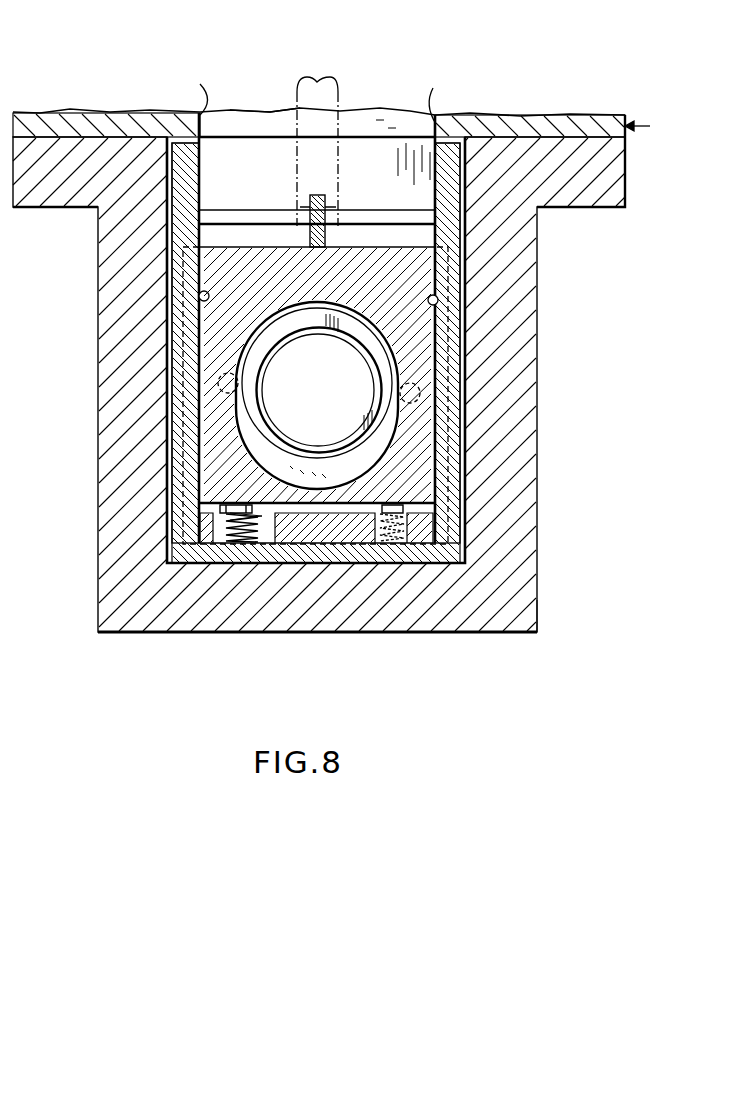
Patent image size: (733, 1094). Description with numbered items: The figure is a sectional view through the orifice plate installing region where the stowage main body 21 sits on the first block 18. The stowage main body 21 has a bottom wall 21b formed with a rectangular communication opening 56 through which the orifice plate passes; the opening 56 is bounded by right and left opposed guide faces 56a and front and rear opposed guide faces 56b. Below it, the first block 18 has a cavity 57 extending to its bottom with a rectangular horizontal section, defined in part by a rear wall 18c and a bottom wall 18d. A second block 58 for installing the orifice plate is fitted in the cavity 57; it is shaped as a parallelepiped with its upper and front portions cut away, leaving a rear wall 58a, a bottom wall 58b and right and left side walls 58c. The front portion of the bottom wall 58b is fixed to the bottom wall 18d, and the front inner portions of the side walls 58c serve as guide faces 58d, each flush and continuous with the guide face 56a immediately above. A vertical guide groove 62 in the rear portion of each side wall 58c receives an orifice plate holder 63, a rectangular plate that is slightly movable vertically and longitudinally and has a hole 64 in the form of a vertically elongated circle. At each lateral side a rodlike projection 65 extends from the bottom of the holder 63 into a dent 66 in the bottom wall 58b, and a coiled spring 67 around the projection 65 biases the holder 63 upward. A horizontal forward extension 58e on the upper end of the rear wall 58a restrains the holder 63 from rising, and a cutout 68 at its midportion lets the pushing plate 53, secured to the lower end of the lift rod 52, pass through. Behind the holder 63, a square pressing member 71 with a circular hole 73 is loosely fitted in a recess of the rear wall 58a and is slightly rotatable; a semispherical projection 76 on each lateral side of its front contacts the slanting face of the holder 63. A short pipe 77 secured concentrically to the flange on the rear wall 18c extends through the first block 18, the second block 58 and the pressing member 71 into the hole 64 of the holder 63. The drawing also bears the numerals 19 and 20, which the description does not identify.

The first block 18 is at (483, 620).
The rear wall of the first block 18c is at (373, 153).
The bottom wall of the first block 18d is at (340, 620).
The housing body 19 is at (609, 188).
The direction of fluid / top surface 20 is at (651, 125).
The stowage main body 21 is at (559, 123).
The bottom wall of the stowage main body 21b is at (515, 120).
The lift rod 52 is at (341, 88).
The pushing plate 53 is at (325, 201).
The communication opening 56 is at (405, 127).
The right and left guide faces 56a is at (329, 90).
The front and rear guide faces 56b is at (261, 118).
The cavity 57 is at (166, 520).
The second block 58 is at (438, 556).
The rear wall of the second block 58a is at (213, 233).
The bottom wall of the second block 58b is at (315, 557).
The side walls of the second block 58c is at (176, 262).
The guide faces of the second block 58d is at (202, 293).
The horizontal forward extension 58e is at (241, 213).
The vertical guide groove 62 is at (187, 343).
The orifice plate holder 63 is at (418, 428).
The hole of the holder 64 is at (252, 455).
The rodlike projection 65 is at (230, 543).
The dent 66 is at (343, 537).
The coiled spring 67 is at (262, 543).
The cutout 68 is at (307, 207).
The pressing member 71 is at (375, 451).
The circular hole of the pressing member 73 is at (254, 431).
The semispherical projection 76 is at (224, 373).
The short pipe 77 is at (305, 322).